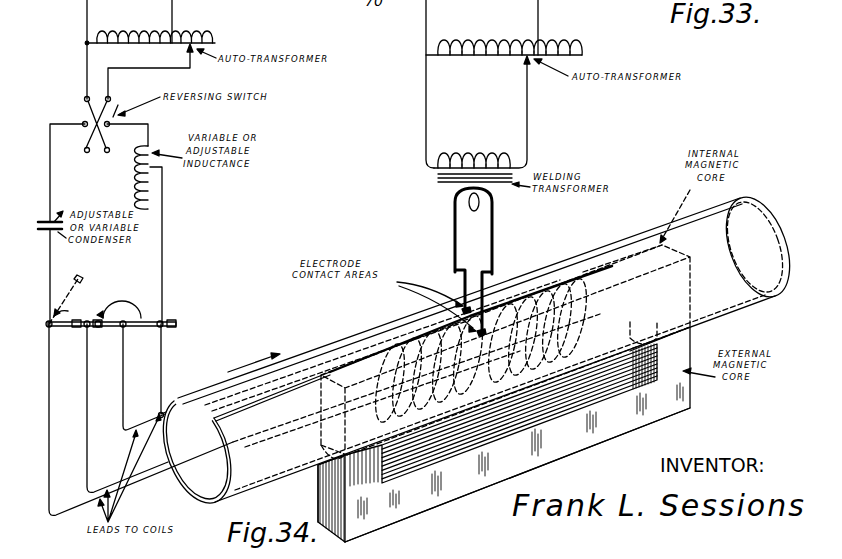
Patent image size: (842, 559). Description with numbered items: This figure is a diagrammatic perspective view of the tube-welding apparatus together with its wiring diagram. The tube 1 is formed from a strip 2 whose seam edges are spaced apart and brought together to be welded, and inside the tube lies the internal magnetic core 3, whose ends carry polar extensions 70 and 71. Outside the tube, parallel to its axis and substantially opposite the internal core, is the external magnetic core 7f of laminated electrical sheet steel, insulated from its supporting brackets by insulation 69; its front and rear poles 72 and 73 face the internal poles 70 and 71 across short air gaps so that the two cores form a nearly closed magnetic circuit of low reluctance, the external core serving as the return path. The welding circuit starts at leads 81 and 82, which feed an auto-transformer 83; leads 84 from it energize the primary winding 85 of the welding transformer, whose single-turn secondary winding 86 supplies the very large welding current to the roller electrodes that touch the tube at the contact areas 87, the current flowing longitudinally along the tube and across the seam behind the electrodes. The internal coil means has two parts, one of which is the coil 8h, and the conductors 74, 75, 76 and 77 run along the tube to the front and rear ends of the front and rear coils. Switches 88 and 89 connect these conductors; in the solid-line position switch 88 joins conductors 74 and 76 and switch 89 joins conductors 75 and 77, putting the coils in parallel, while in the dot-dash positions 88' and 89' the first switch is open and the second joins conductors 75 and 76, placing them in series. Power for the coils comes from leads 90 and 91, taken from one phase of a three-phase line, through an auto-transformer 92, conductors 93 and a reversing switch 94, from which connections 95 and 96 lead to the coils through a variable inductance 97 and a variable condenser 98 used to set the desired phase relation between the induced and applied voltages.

The tube 1 is at (764, 297).
The skelp strip edges 2 is at (238, 407).
The internal magnetic core 3 is at (610, 266).
The insulation 69 is at (583, 270).
The front polar extension 70 is at (320, 441).
The rear polar extension 71 is at (689, 315).
The front pole of external core 72 is at (316, 479).
The rear pole of external core 73 is at (693, 338).
The conductor 74 is at (48, 365).
The conductor 75 is at (122, 365).
The conductor 76 is at (86, 365).
The conductor 77 is at (160, 365).
The external magnetic core 7f is at (459, 478).
The lead 81 is at (425, 22).
The lead 82 is at (540, 13).
The auto-transformer 83 is at (512, 56).
The leads 84 is at (426, 125).
The primary winding 85 is at (484, 149).
The secondary winding 86 is at (452, 200).
The electrode contact areas 87 is at (464, 307).
The switch 88 is at (68, 332).
The switch open position 88' is at (77, 299).
The switch 89 is at (147, 338).
The switch series position 89' is at (118, 328).
The internal coil part 8h is at (540, 262).
The lead 90 is at (86, 29).
The lead 91 is at (173, 16).
The auto-transformer 92 is at (155, 28).
The conductors 93 is at (85, 81).
The reversing switch 94 is at (85, 116).
The connection 95 is at (50, 160).
The connection 96 is at (149, 124).
The variable inductance 97 is at (135, 173).
The variable condenser 98 is at (43, 235).